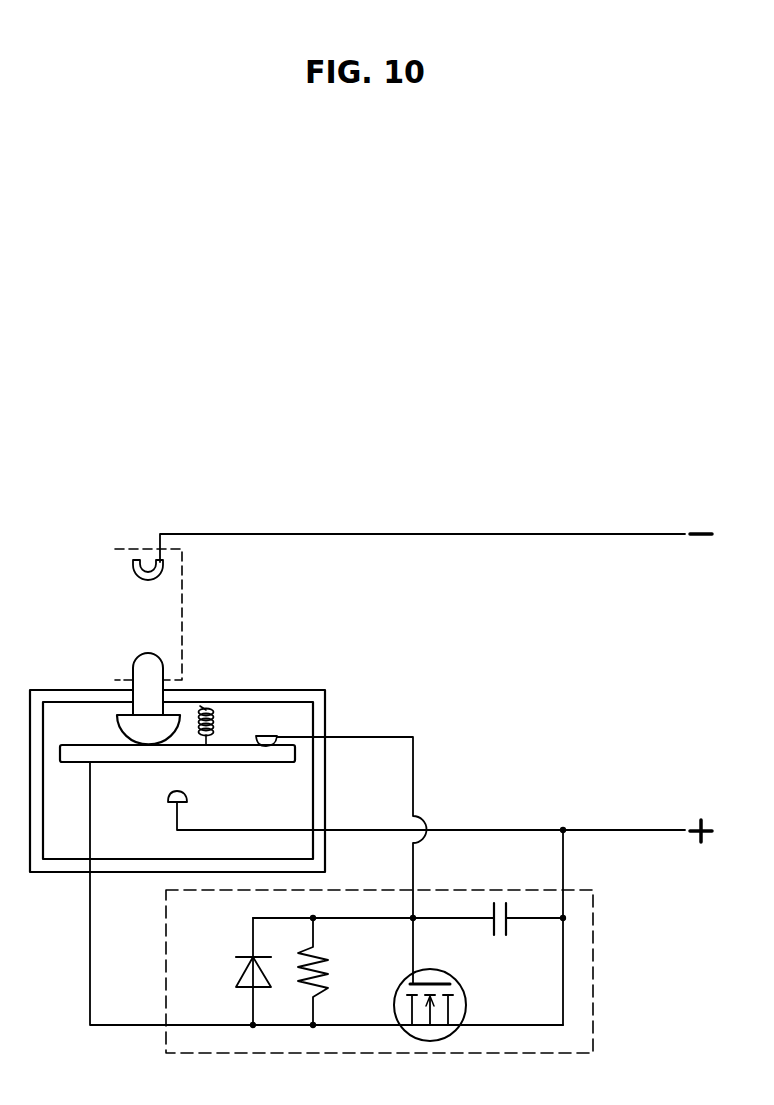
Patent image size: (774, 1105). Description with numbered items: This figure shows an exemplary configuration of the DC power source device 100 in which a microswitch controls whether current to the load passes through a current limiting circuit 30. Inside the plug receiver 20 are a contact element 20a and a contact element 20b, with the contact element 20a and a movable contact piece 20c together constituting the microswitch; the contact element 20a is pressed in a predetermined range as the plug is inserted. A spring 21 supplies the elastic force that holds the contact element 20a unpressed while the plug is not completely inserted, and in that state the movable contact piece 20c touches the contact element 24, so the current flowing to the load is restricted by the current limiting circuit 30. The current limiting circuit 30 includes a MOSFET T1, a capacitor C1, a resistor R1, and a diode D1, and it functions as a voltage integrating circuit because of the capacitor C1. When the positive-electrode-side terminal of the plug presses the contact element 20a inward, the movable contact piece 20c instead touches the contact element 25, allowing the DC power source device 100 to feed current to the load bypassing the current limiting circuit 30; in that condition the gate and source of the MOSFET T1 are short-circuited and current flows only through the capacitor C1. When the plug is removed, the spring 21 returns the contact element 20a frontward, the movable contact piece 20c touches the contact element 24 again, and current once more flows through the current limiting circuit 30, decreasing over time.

The DC power source device 100 is at (503, 492).
The plug receiver 20 is at (130, 548).
The contact element 20a is at (133, 663).
The contact element 20b is at (133, 573).
The movable contact piece 20c is at (137, 763).
The spring 21 is at (217, 719).
The contact element 24 is at (267, 734).
The contact element 25 is at (188, 797).
The current limiting circuit 30 is at (593, 958).
The diode D1 is at (234, 971).
The resistor R1 is at (332, 971).
The capacitor C1 is at (499, 935).
The MOSFET T1 is at (466, 1005).